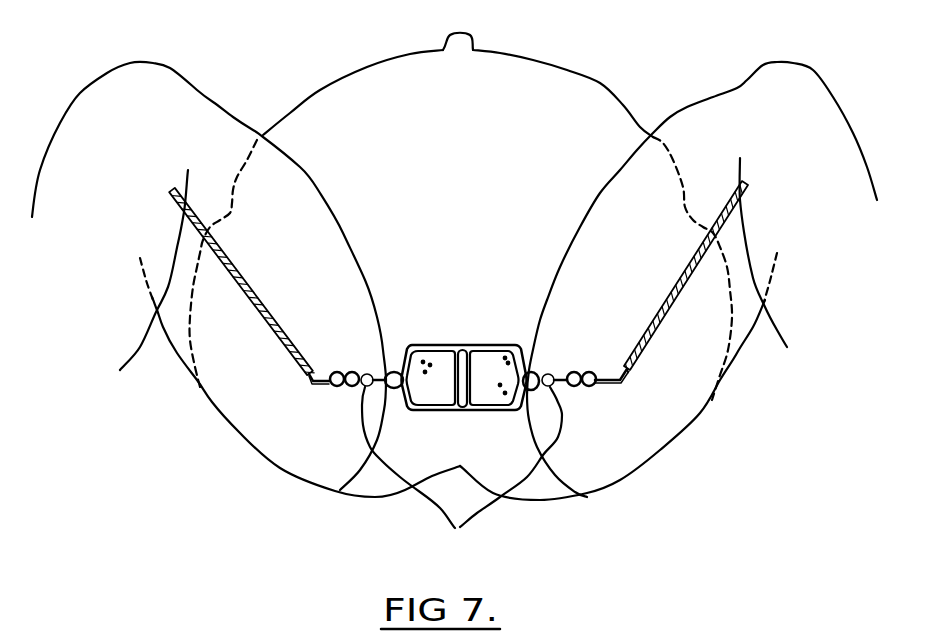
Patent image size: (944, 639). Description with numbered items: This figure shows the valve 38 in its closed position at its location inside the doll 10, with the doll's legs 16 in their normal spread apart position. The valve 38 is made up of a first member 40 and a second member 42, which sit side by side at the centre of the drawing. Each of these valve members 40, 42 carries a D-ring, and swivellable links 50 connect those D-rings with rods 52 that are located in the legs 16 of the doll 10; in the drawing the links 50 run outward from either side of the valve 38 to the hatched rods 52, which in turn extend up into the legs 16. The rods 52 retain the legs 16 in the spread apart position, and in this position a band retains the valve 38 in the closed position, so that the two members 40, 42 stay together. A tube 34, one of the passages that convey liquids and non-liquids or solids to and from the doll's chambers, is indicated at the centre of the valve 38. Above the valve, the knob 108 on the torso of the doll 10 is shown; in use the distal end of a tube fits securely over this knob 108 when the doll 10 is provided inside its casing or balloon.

The doll 10 is at (559, 535).
The legs 16 is at (142, 78).
The tube 34 is at (462, 347).
The valve 38 is at (455, 298).
The first member 40 is at (493, 392).
The second member 42 is at (433, 395).
The swivellable links 50 is at (462, 473).
The rods 52 is at (303, 360).
The knob 108 is at (473, 33).